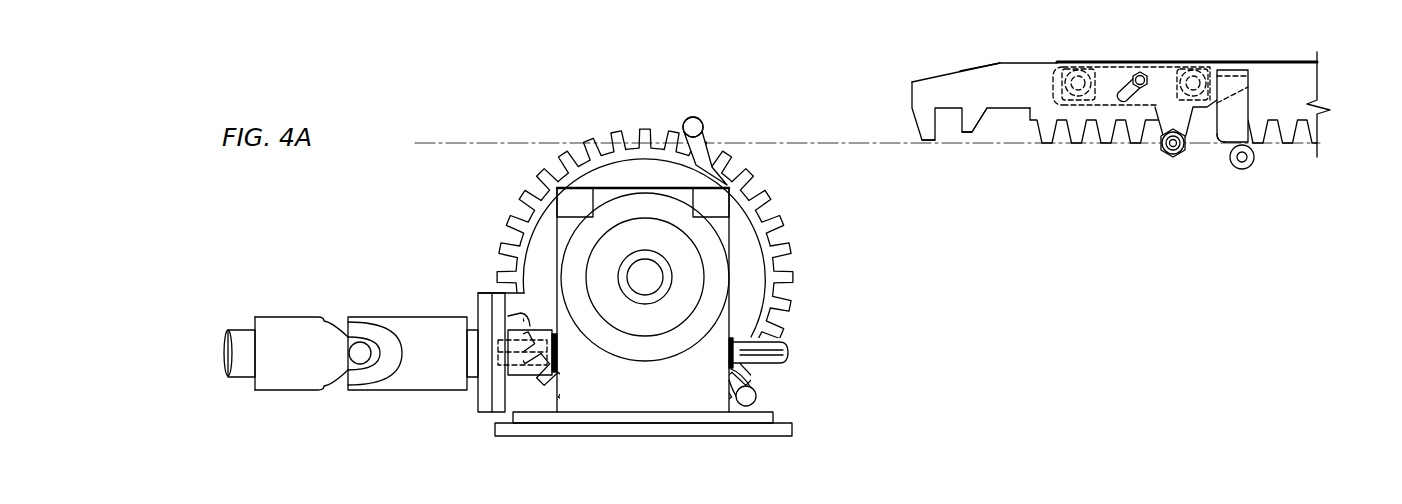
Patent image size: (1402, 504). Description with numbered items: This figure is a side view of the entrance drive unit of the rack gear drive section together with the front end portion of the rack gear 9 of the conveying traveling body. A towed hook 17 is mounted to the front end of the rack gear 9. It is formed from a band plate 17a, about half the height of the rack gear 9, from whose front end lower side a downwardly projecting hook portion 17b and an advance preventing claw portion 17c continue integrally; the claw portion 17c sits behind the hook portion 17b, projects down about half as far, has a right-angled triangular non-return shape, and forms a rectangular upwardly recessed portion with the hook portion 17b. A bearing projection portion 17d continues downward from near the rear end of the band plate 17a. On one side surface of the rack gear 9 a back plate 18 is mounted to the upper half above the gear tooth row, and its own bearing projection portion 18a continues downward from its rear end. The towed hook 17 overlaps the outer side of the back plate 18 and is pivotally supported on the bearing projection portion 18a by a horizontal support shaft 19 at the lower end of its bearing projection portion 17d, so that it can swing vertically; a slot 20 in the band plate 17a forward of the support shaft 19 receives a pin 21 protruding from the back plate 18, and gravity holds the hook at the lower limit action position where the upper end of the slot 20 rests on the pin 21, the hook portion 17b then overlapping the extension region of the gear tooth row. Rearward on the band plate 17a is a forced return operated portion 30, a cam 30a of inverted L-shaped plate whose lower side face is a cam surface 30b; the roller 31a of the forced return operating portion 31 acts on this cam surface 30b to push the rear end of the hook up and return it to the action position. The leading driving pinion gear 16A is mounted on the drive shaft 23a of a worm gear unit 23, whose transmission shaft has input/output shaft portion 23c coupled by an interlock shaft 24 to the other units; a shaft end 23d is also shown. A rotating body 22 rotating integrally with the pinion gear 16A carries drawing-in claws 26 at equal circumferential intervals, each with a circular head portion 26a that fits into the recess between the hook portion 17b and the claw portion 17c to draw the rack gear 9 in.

The rack gear 9 is at (1302, 78).
The leading driving pinion gear 16A is at (563, 158).
The towed hook 17 is at (908, 92).
The band plate 17a is at (1007, 83).
The hook portion 17b is at (928, 133).
The advance preventing claw portion 17c is at (968, 117).
The bearing projection portion 17d is at (1172, 112).
The back plate 18 is at (1100, 100).
The bearing projection portion 18a is at (1150, 140).
The support shaft 19 is at (1177, 156).
The slot 20 is at (1122, 88).
The pin 21 is at (1140, 72).
The rotating body 22 is at (746, 290).
The worm gear unit 23 is at (648, 382).
The drive shaft 23a is at (648, 275).
The input/output shaft portion 23c is at (527, 366).
The shaft end 23d is at (782, 357).
The interlock shaft 24 is at (236, 357).
The drawing-in claw 26 is at (712, 122).
The head portion 26a is at (687, 121).
The forced return operated portion 30 is at (1254, 94).
The cam 30a is at (1238, 115).
The cam surface 30b is at (1217, 140).
The forced return operating portion 31 is at (1248, 174).
The roller 31a is at (1254, 160).